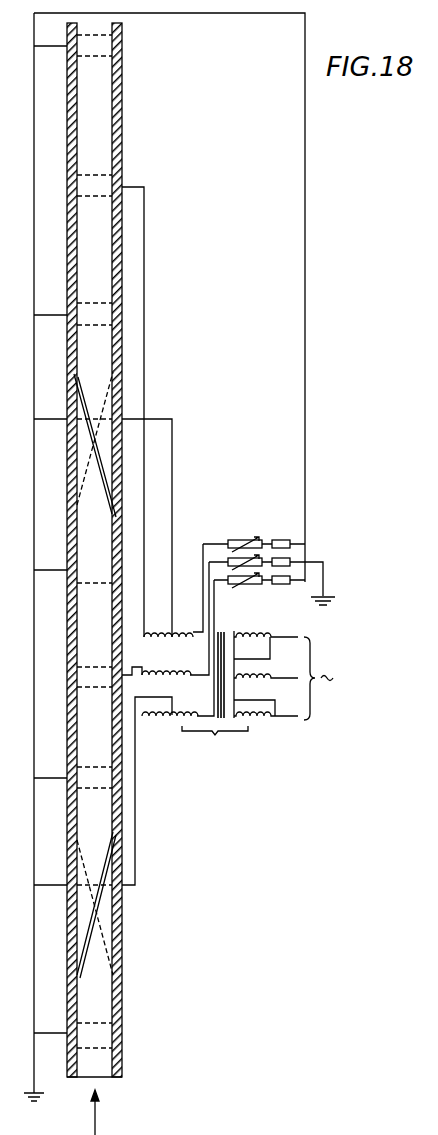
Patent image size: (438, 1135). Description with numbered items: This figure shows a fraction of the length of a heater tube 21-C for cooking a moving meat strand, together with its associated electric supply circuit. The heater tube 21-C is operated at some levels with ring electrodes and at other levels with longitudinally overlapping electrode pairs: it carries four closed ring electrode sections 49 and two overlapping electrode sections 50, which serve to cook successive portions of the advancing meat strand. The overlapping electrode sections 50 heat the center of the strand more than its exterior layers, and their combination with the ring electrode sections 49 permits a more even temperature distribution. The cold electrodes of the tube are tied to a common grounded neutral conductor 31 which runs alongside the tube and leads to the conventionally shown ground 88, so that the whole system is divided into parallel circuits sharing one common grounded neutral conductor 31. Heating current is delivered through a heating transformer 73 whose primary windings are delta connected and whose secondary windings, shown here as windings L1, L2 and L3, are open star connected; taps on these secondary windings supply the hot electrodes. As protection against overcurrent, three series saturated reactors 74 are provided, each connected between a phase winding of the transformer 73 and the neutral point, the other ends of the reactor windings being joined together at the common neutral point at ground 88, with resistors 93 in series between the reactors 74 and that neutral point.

The grounded neutral conductor 31 is at (305, 335).
The heater tube 21-C is at (122, 1003).
The closed ring electrode sections 49 is at (101, 118).
The overlapping electrode sections 50 is at (108, 465).
The series saturated reactors 74 is at (237, 538).
The resistors 93 is at (290, 538).
The ground 88 is at (306, 561).
The heating transformer 73 is at (195, 695).
The secondary winding L1 is at (266, 672).
The secondary winding L2 is at (266, 673).
The secondary winding L3 is at (266, 709).